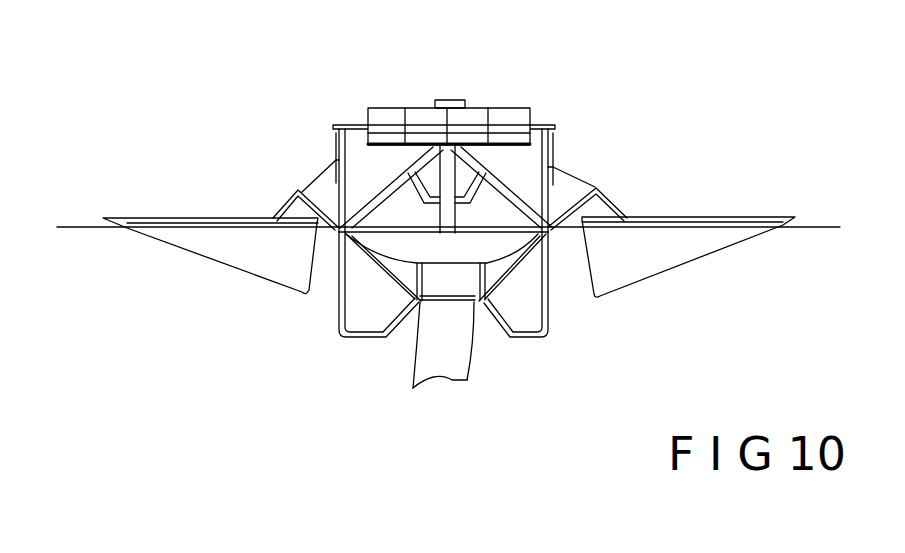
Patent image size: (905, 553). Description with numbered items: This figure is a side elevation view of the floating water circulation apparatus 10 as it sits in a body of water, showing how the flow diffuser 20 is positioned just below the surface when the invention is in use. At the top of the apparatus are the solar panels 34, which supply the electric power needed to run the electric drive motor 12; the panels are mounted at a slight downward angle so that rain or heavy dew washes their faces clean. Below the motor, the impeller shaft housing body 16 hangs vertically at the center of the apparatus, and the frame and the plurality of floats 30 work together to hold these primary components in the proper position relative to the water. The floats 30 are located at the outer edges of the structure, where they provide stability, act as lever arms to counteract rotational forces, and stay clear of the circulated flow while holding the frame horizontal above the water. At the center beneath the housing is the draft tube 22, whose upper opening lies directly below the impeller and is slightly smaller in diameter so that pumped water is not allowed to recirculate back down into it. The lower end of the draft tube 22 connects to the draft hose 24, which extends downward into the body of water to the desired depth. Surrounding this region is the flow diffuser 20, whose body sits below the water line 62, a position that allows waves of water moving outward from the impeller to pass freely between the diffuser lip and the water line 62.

The floating water circulation apparatus 10 is at (724, 289).
The electric drive motor 12 is at (450, 100).
The impeller shaft housing body 16 is at (448, 178).
The flow diffuser 20 is at (395, 248).
The draft tube 22 is at (460, 282).
The draft hose 24 is at (437, 355).
The floats 30 is at (180, 217).
The solar panels 34 is at (383, 108).
The water line 62 is at (77, 223).